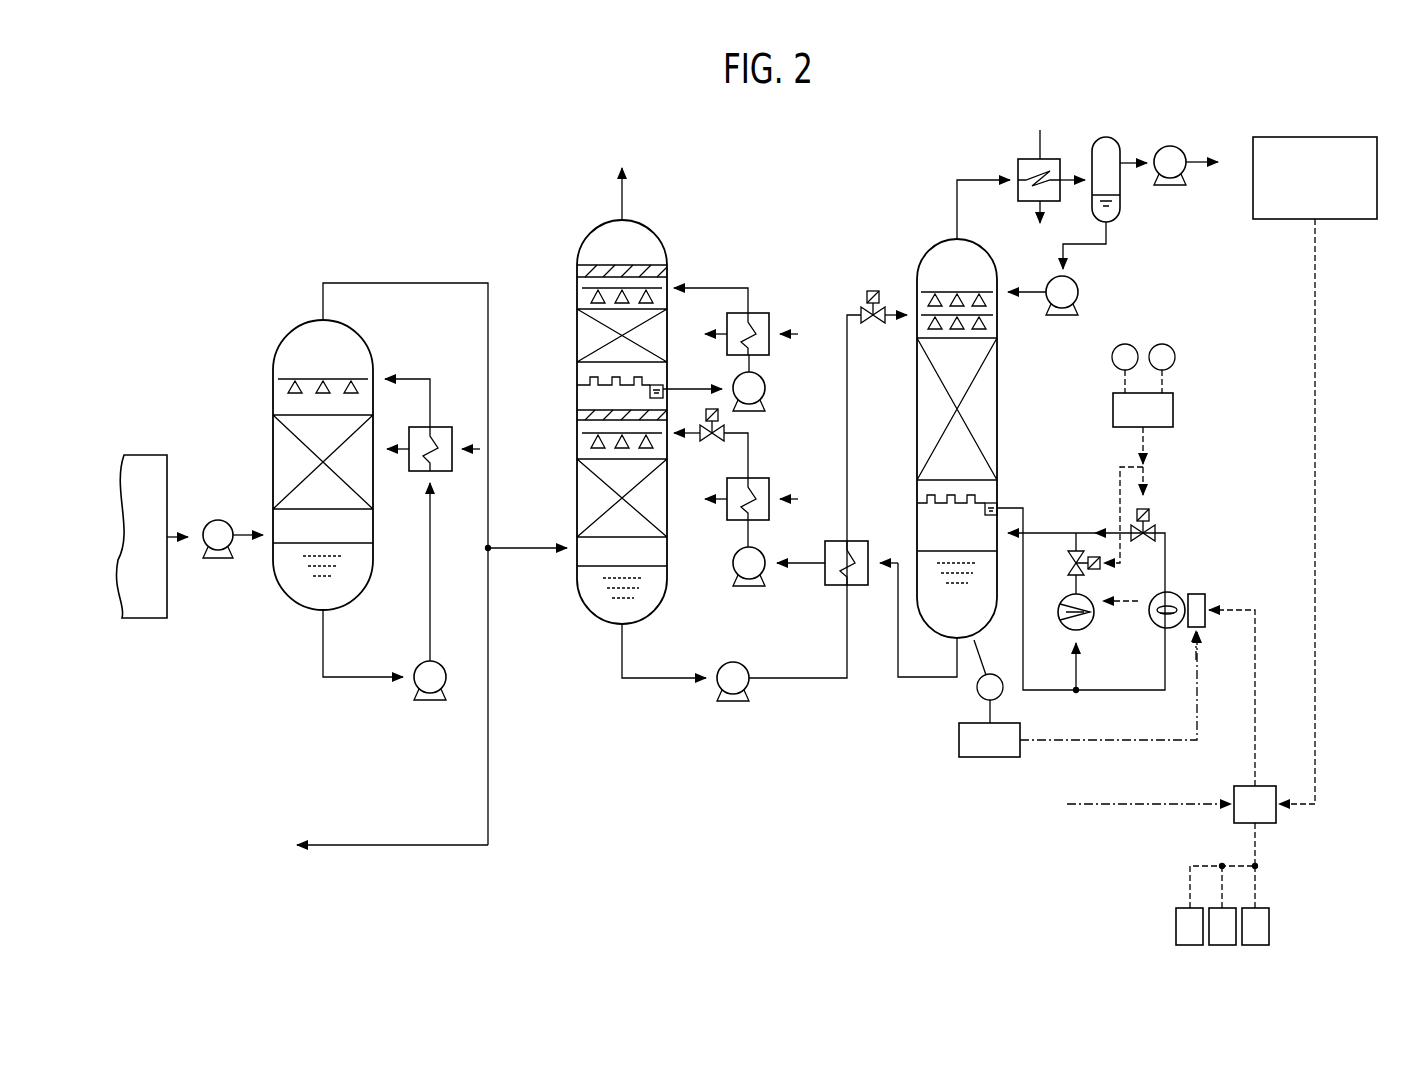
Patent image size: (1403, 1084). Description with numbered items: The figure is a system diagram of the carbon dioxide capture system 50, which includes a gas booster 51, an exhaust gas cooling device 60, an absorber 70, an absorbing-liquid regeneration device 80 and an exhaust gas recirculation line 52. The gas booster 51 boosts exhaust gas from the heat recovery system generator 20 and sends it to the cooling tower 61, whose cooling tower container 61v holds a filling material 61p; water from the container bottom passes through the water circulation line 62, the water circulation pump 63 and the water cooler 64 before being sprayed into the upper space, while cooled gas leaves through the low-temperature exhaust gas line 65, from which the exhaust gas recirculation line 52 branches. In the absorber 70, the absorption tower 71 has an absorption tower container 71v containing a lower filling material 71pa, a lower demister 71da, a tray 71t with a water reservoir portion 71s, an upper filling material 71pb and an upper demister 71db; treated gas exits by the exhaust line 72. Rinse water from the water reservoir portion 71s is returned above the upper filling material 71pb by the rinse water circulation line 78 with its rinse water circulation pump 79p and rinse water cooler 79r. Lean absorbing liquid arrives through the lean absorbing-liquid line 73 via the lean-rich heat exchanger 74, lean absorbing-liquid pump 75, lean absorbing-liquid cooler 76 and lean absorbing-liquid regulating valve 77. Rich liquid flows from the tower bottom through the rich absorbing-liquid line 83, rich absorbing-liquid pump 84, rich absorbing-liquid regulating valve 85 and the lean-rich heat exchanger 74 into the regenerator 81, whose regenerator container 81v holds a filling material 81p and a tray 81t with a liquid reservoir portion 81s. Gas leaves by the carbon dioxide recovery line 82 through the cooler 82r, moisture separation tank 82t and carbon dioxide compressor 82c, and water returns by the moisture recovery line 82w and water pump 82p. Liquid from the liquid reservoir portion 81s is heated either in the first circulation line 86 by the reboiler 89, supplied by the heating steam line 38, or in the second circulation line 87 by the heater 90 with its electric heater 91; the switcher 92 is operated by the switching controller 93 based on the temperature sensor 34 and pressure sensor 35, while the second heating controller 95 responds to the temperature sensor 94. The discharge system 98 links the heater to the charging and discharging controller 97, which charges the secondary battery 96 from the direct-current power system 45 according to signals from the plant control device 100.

The heat recovery system generator 20 is at (143, 630).
The temperature sensor 34 is at (1125, 343).
The pressure sensor 35 is at (1176, 357).
The heating steam line 38 is at (1124, 603).
The direct-current power system 45 is at (1105, 808).
The carbon dioxide capture system 50 is at (348, 200).
The gas booster 51 is at (218, 562).
The exhaust gas recirculation line 52 is at (388, 843).
The exhaust gas cooling device 60 is at (292, 308).
The cooling tower 61 is at (277, 340).
The cooling tower container 61v is at (272, 373).
The filling material 61p is at (282, 456).
The water circulation line 62 is at (320, 640).
The water circulation pump 63 is at (430, 702).
The water cooler 64 is at (446, 426).
The low-temperature exhaust gas line 65 is at (410, 282).
The absorber 70 is at (594, 212).
The absorption tower 71 is at (577, 238).
The absorption tower container 71v is at (656, 226).
The upper demister 71db is at (577, 270).
The upper filling material 71pb is at (590, 338).
The tray 71t is at (580, 379).
The water reservoir portion 71s is at (662, 385).
The lower demister 71da is at (577, 416).
The lower filling material 71pa is at (577, 493).
The exhaust line 72 is at (626, 193).
The lean absorbing-liquid line 73 is at (750, 462).
The lean-rich heat exchanger 74 is at (838, 540).
The lean absorbing-liquid pump 75 is at (749, 590).
The lean absorbing-liquid cooler 76 is at (725, 516).
The lean absorbing-liquid regulating valve 77 is at (727, 431).
The rinse water circulation line 78 is at (720, 287).
The rinse water cooler 79r is at (760, 312).
The rinse water circulation pump 79p is at (766, 386).
The absorbing-liquid regeneration device 80 is at (877, 217).
The regenerator 81 is at (927, 236).
The regenerator container 81v is at (1000, 268).
The filling material 81p is at (1000, 380).
The tray 81t is at (922, 498).
The liquid reservoir portion 81s is at (996, 502).
The carbon dioxide recovery line 82 is at (978, 178).
The cooler 82r is at (1052, 157).
The moisture separation tank 82t is at (1122, 148).
The carbon dioxide compressor 82c is at (1175, 146).
The water pump 82p is at (1078, 290).
The moisture recovery line 82w is at (1022, 296).
The rich absorbing-liquid line 83 is at (818, 680).
The rich absorbing-liquid pump 84 is at (733, 700).
The rich absorbing-liquid regulating valve 85 is at (870, 292).
The first circulation line 86 is at (1082, 692).
The second circulation line 87 is at (1168, 545).
The reboiler 89 is at (1062, 598).
The heater 90 is at (1270, 552).
The electric heater 91 is at (1200, 594).
The switcher 92 is at (1248, 455).
The switching controller 93 is at (1174, 409).
The temperature sensor 94 is at (976, 688).
The second heating controller 95 is at (990, 758).
The secondary battery 96 is at (1174, 927).
The charging and discharging controller 97 is at (1278, 820).
The discharge system 98 is at (1253, 762).
The plant control device 100 is at (1357, 224).